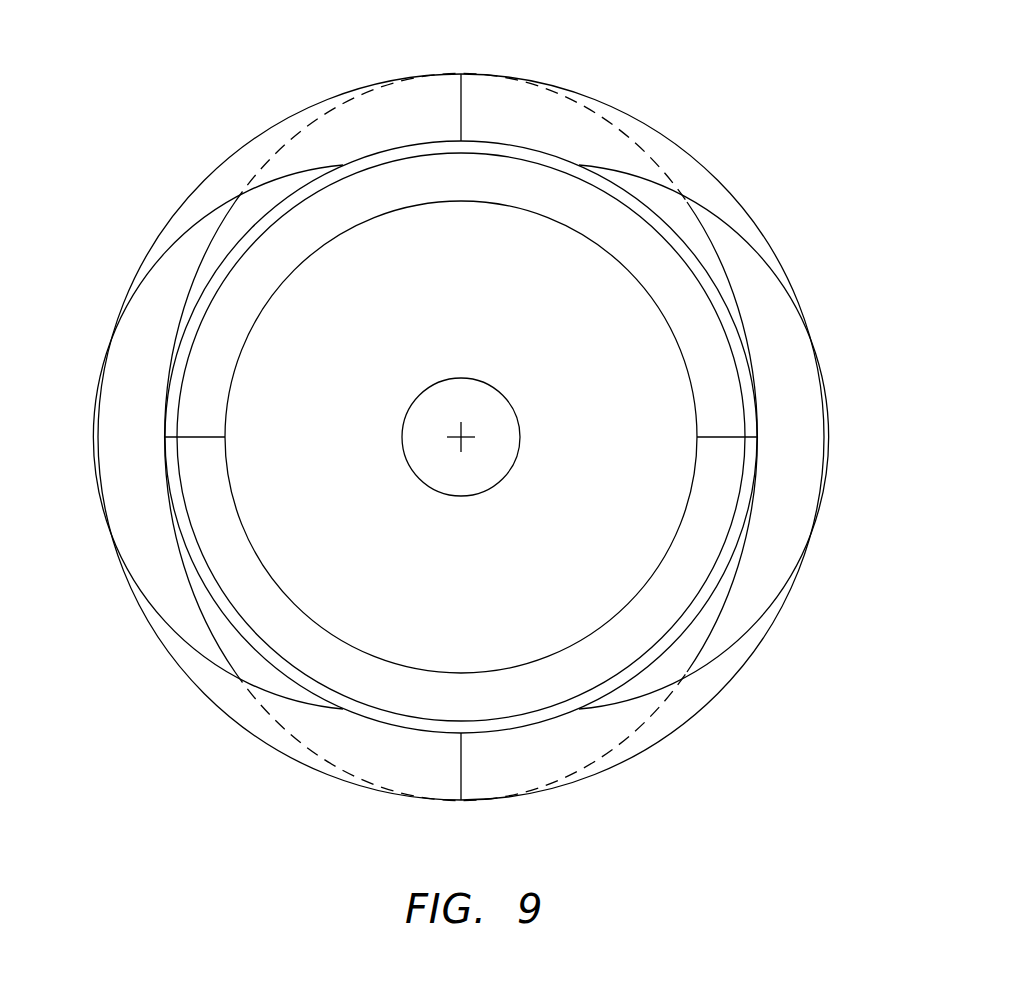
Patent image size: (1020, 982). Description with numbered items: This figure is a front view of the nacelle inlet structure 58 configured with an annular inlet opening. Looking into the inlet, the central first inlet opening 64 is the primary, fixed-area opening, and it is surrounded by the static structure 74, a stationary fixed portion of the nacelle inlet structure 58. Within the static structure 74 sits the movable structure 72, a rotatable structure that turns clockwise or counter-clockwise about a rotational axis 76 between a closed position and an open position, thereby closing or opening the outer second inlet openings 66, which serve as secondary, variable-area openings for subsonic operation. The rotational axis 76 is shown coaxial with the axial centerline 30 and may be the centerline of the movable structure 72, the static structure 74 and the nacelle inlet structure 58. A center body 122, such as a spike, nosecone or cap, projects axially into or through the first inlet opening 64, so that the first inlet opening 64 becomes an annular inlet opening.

The nacelle inlet structure 58 is at (461, 400).
The static structure 74 is at (703, 160).
The first inlet opening 64 is at (450, 308).
The movable structure 72 is at (627, 291).
The second inlet openings 66 is at (142, 444).
The center body 122 is at (460, 497).
The axial centerline 30 is at (523, 462).
The rotational axis 76 is at (465, 439).